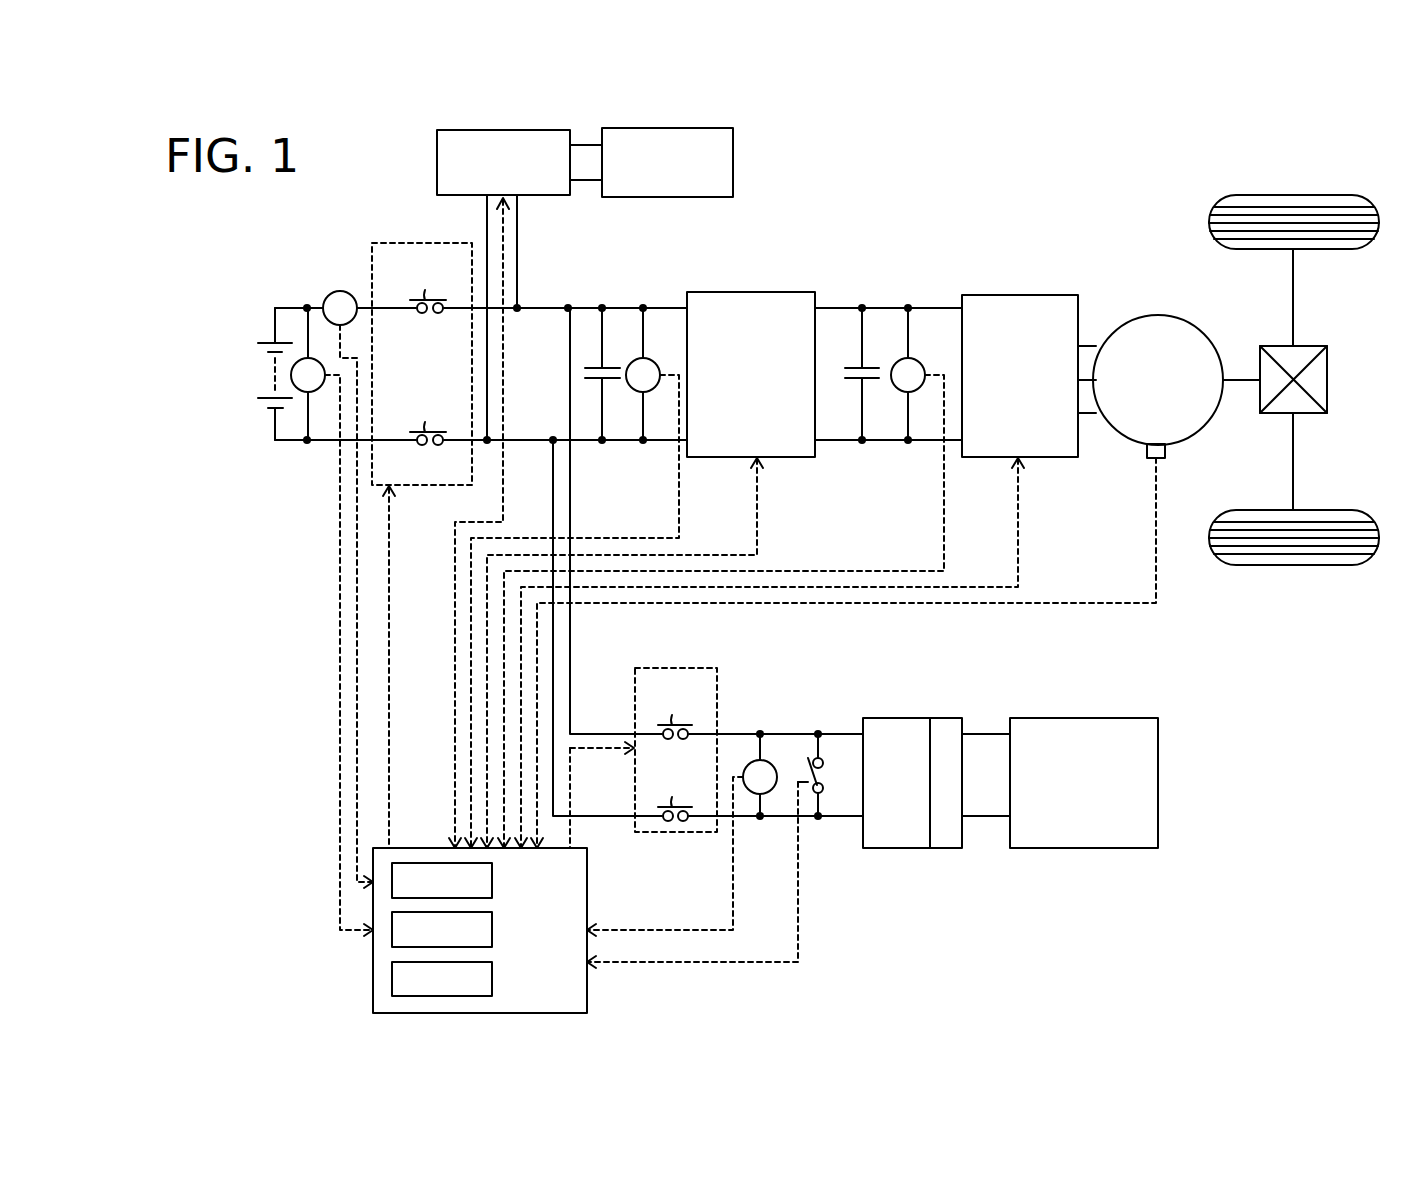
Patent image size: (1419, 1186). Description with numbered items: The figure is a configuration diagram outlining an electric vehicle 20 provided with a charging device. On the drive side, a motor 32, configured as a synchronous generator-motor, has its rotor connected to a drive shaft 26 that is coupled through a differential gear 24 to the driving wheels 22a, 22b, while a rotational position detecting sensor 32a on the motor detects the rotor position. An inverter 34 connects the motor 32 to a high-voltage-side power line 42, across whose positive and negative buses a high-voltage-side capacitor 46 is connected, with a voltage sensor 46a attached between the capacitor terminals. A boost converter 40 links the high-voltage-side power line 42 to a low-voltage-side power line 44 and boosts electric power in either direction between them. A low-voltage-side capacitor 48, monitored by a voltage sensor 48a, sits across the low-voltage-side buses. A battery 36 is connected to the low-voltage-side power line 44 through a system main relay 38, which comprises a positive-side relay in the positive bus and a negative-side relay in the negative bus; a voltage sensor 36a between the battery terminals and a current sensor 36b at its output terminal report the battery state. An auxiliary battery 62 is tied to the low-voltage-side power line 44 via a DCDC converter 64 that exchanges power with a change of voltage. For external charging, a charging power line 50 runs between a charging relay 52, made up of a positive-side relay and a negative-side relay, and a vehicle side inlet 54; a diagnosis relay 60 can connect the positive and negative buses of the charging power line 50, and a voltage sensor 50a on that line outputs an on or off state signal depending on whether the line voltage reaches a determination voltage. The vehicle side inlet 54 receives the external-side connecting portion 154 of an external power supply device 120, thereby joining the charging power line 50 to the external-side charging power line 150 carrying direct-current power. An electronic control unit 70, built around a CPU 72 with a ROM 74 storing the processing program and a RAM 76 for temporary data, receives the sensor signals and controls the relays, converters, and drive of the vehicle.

The electric vehicle 20 is at (975, 166).
The driving wheel 22a is at (1295, 195).
The driving wheel 22b is at (1295, 565).
The differential gear 24 is at (1310, 346).
The drive shaft 26 is at (1243, 377).
The motor 32 is at (1158, 315).
The rotational position detecting sensor 32a is at (1167, 451).
The inverter 34 is at (1018, 295).
The battery 36 is at (265, 336).
The voltage sensor 36a is at (305, 393).
The current sensor 36b is at (340, 291).
The system main relay 38 is at (383, 240).
The boost converter 40 is at (755, 292).
The high-voltage-side power line 42 is at (826, 438).
The low-voltage-side power line 44 is at (550, 440).
The high-voltage-side capacitor 46 is at (869, 366).
The voltage sensor 46a is at (921, 361).
The low-voltage-side capacitor 48 is at (609, 366).
The voltage sensor 48a is at (658, 362).
The charging power line 50 is at (839, 815).
The voltage sensor 50a is at (744, 765).
The charging relay 52 is at (677, 668).
The vehicle side inlet 54 is at (896, 718).
The diagnosis relay 60 is at (800, 778).
The auxiliary battery 62 is at (733, 163).
The DCDC converter 64 is at (437, 160).
The electronic control unit 70 is at (587, 998).
The CPU 72 is at (492, 882).
The ROM 74 is at (492, 930).
The RAM 76 is at (492, 979).
The external power supply device 120 is at (1082, 718).
The external-side charging power line 150 is at (978, 815).
The external-side connecting portion 154 is at (946, 718).